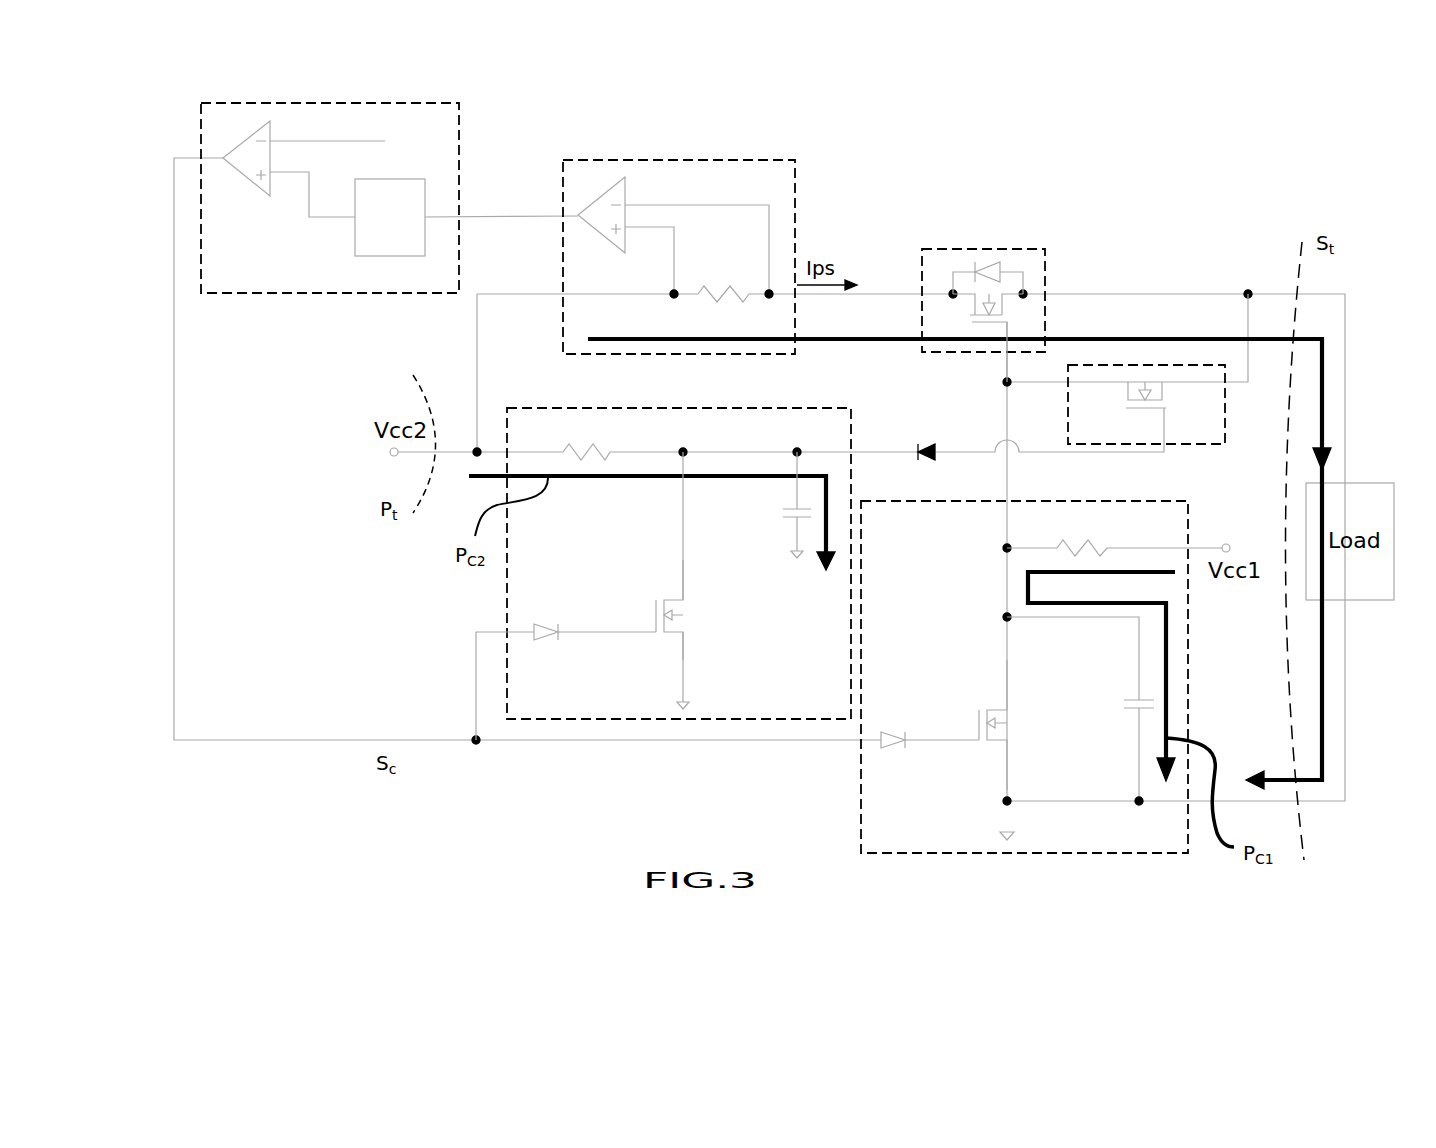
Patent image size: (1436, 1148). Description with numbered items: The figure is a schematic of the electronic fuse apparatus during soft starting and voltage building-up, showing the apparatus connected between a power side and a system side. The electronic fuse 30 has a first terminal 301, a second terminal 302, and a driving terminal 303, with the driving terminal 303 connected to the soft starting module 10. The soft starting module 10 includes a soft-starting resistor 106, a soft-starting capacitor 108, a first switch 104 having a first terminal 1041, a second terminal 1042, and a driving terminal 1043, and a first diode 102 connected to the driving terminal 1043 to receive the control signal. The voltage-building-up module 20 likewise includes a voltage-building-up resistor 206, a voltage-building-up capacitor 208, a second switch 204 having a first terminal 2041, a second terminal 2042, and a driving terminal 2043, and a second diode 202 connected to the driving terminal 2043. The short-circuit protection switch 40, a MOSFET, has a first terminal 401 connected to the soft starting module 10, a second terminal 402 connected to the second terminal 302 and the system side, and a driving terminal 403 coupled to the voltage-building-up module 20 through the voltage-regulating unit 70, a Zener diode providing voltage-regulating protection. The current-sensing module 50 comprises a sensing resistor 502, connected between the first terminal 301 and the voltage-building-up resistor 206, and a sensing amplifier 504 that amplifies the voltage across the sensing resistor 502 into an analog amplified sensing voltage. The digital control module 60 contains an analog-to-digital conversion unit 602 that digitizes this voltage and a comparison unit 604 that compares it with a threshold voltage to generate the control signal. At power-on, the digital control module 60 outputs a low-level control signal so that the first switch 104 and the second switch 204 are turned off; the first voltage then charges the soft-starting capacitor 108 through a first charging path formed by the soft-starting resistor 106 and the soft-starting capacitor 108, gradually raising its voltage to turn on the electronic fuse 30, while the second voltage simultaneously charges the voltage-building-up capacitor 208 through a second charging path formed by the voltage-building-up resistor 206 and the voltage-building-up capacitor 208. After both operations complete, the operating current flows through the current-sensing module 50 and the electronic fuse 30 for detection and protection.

The soft starting module 10 is at (878, 808).
The first diode 102 is at (893, 761).
The first switch 104 is at (1021, 724).
The first terminal of first switch 1041 is at (978, 681).
The second terminal of first switch 1042 is at (977, 765).
The driving terminal of first switch 1043 is at (942, 724).
The soft-starting resistor 106 is at (1112, 533).
The soft-starting capacitor 108 is at (1077, 726).
The voltage-building-up module 20 is at (584, 701).
The second diode 202 is at (521, 682).
The second switch 204 is at (697, 578).
The first terminal of second switch 2041 is at (651, 577).
The second terminal of second switch 2042 is at (653, 659).
The driving terminal of second switch 2043 is at (607, 615).
The voltage-building-up resistor 206 is at (586, 436).
The voltage-building-up capacitor 208 is at (772, 503).
The electronic fuse 30 is at (1022, 257).
The first terminal of electronic fuse 301 is at (925, 299).
The second terminal of electronic fuse 302 is at (1033, 293).
The driving terminal of electronic fuse 303 is at (976, 356).
The short-circuit protection switch 40 is at (1172, 370).
The first terminal of short-circuit protection switch 401 is at (1110, 396).
The second terminal of short-circuit protection switch 402 is at (1179, 396).
The driving terminal of short-circuit protection switch 403 is at (1143, 425).
The current-sensing module 50 is at (758, 172).
The sensing resistor 502 is at (721, 279).
The sensing amplifier 504 is at (673, 231).
The digital control module 60 is at (260, 282).
The analog-to-digital conversion unit 602 is at (426, 232).
The comparison unit 604 is at (329, 169).
The voltage-regulating unit 70 is at (922, 435).